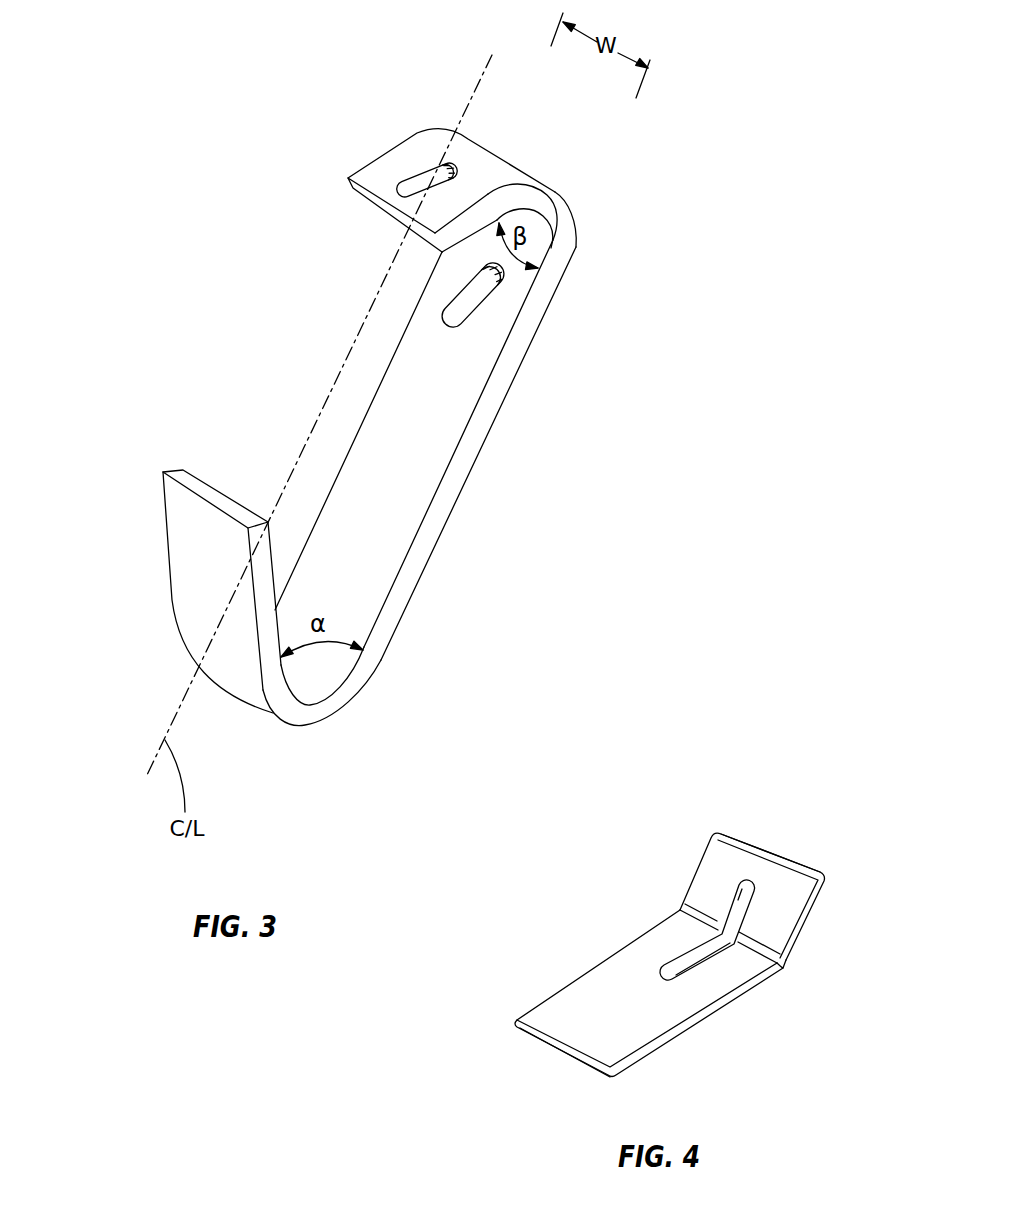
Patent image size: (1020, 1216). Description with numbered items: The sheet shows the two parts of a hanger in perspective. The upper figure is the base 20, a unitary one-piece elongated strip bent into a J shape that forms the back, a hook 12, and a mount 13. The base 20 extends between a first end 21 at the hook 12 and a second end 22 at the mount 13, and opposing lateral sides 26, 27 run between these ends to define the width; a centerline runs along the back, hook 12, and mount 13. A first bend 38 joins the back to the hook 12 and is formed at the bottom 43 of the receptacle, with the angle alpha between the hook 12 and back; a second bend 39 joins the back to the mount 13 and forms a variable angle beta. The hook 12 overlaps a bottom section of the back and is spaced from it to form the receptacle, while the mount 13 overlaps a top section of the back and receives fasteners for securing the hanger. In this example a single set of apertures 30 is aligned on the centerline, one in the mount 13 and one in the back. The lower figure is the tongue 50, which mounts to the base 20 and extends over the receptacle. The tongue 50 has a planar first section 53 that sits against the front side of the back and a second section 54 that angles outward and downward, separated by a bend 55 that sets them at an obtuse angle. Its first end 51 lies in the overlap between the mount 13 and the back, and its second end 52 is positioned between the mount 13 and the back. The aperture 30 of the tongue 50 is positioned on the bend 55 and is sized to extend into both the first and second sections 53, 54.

In FIG. 3, the hook 12 is at (160, 650).
In FIG. 3, the mount 13 is at (479, 121).
In FIG. 3, the base 20 is at (247, 207).
In FIG. 3, the first end 21 is at (213, 497).
In FIG. 3, the second end 22 is at (373, 202).
In FIG. 3, the lateral side 26 is at (363, 415).
In FIG. 3, the lateral side 27 is at (480, 452).
In FIG. 4, the aperture 30 is at (690, 943).
In FIG. 3, the first bend 38 is at (258, 708).
In FIG. 3, the second bend 39 is at (519, 170).
In FIG. 3, the bottom 43 is at (317, 703).
In FIG. 4, the tongue 50 is at (580, 907).
In FIG. 4, the first end 51 is at (757, 843).
In FIG. 4, the second end 52 is at (567, 1050).
In FIG. 4, the first section 53 is at (782, 892).
In FIG. 4, the second section 54 is at (643, 1028).
In FIG. 4, the bend 55 is at (783, 962).